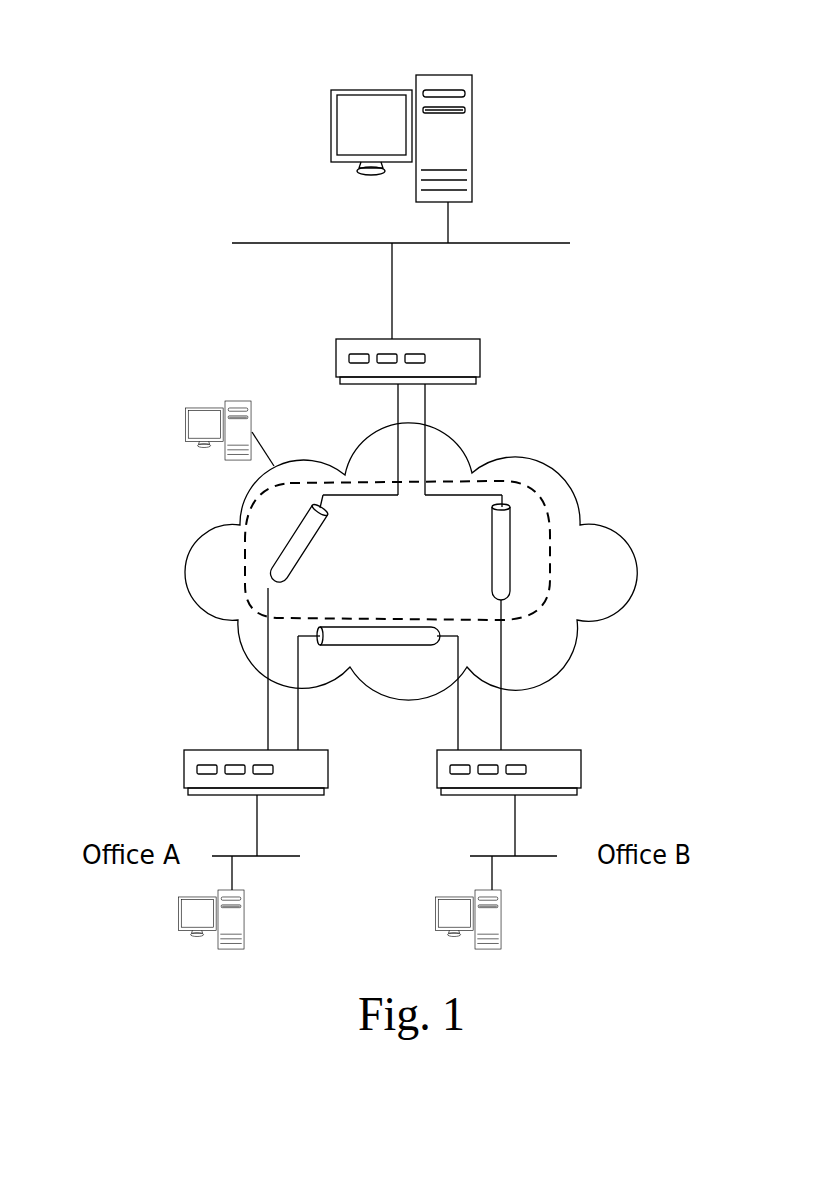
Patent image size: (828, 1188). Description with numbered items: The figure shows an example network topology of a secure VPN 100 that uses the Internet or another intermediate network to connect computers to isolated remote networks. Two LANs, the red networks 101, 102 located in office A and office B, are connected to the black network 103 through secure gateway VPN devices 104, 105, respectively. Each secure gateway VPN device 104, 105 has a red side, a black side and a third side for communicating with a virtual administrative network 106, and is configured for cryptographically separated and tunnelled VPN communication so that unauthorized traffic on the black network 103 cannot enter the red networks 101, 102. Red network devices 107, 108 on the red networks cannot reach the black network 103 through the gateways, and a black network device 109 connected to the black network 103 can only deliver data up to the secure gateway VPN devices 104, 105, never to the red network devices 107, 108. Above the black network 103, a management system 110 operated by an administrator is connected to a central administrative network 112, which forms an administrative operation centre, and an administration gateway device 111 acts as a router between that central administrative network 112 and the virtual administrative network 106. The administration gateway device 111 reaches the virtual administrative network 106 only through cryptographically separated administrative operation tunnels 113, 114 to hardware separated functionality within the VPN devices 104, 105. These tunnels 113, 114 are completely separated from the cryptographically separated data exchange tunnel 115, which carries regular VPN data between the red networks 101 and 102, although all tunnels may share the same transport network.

The secure VPN 100 is at (93, 62).
The red network 101 is at (300, 856).
The red network 102 is at (557, 856).
The black network 103 is at (535, 466).
The secure gateway VPN device 104 is at (310, 750).
The secure gateway VPN device 105 is at (545, 750).
The virtual administrative network 106 is at (535, 505).
The red network device 107 is at (247, 912).
The red network device 108 is at (505, 912).
The black network device 109 is at (232, 401).
The management system 110 is at (475, 130).
The administration gateway device 111 is at (460, 339).
The central administrative network 112 is at (545, 243).
The cryptographically separated administrative operation tunnel 113 is at (290, 557).
The cryptographically separated administrative operation tunnel 114 is at (505, 552).
The cryptographically separated data exchange tunnel 115 is at (395, 640).